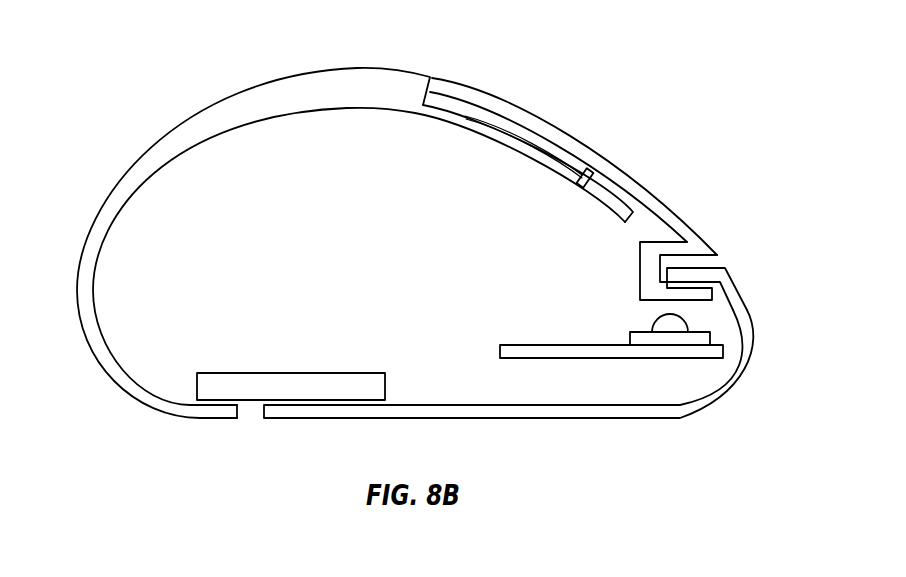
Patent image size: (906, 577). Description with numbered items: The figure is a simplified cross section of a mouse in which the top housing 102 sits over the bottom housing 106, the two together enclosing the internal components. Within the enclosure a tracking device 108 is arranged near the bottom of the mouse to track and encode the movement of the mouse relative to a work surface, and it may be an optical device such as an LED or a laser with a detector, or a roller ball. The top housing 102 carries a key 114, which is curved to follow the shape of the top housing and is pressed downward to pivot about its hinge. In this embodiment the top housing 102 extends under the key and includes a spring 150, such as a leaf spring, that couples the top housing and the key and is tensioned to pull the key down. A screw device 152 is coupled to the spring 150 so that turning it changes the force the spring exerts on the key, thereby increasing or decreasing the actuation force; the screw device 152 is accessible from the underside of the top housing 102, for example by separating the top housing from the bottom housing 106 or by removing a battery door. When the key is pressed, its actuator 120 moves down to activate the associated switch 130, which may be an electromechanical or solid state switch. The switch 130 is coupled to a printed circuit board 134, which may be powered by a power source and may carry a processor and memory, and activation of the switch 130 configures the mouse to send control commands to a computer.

The top housing 102 is at (282, 75).
The bottom housing 106 is at (417, 418).
The tracking device 108 is at (290, 372).
The key 114 is at (604, 146).
The actuator 120 is at (640, 306).
The switch 130 is at (632, 332).
The printed circuit board 134 is at (553, 358).
The spring 150 is at (555, 147).
The screw device 152 is at (577, 187).